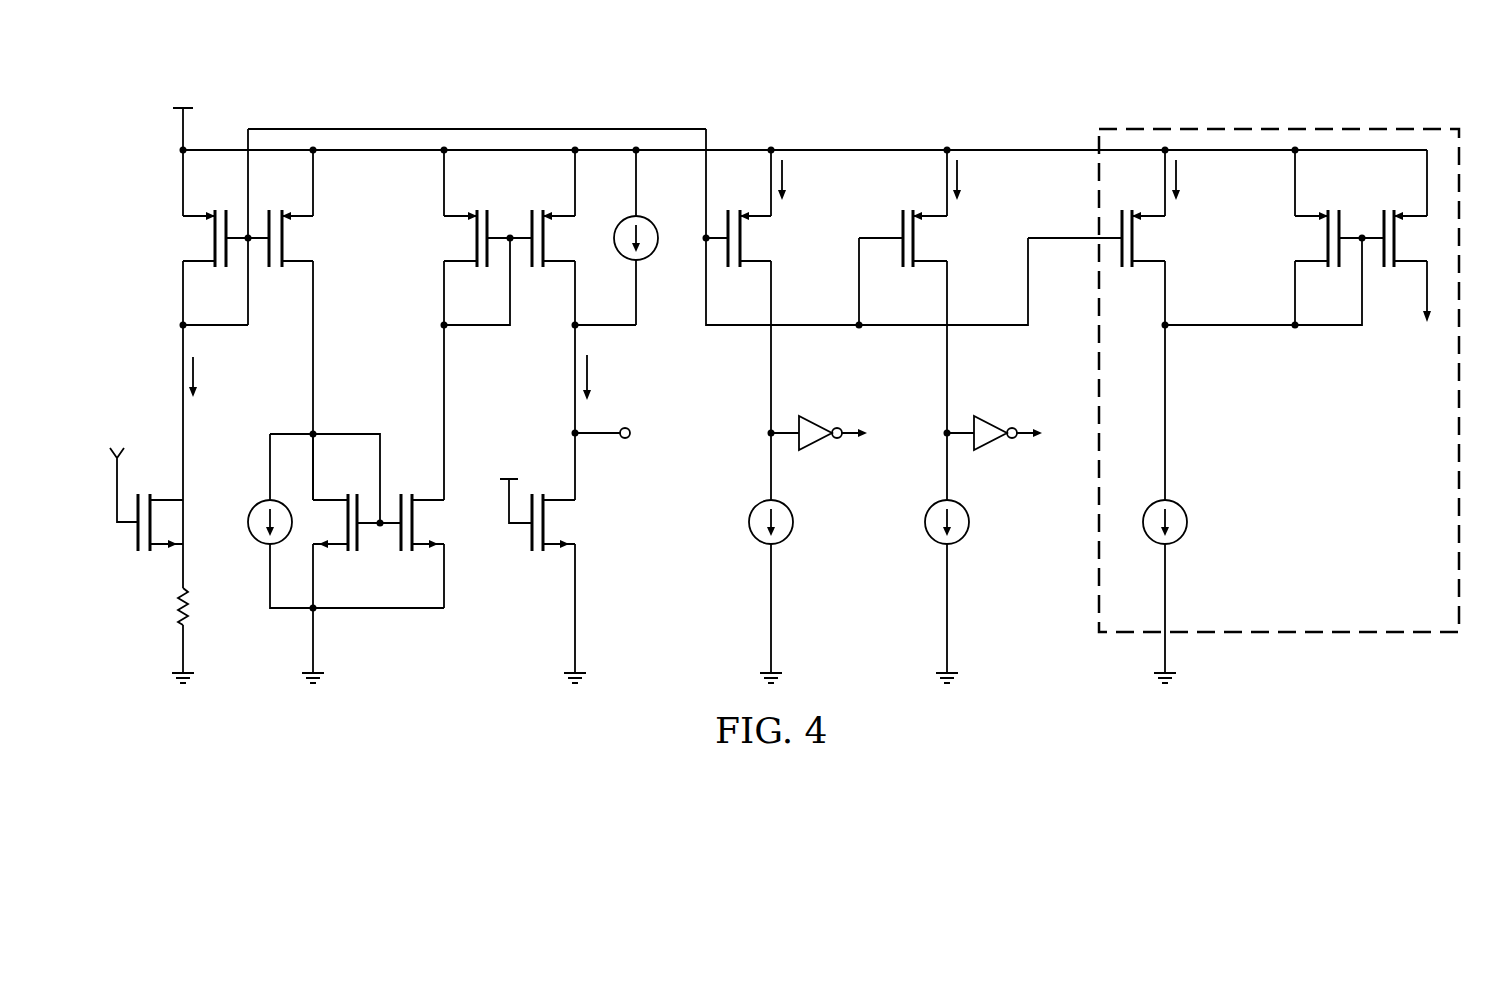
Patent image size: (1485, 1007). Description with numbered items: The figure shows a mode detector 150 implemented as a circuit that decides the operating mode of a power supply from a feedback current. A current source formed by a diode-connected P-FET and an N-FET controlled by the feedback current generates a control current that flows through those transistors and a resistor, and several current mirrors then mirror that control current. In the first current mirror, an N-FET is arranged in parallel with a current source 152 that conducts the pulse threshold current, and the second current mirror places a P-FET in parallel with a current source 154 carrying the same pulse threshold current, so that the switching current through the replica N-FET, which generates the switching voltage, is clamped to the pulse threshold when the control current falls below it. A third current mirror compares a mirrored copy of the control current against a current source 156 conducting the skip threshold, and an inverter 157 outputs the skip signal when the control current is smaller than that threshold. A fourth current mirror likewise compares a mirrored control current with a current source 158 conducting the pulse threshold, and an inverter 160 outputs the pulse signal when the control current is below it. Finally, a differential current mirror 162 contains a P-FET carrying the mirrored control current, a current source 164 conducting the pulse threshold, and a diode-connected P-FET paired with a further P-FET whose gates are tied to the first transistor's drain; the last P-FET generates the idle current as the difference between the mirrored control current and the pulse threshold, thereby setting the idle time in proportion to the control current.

The mode detector 150 is at (428, 84).
The current source 152 is at (255, 539).
The current source 154 is at (651, 256).
The current source 156 is at (785, 540).
The inverter 157 is at (818, 424).
The current source 158 is at (961, 540).
The inverter 160 is at (993, 424).
The differential current mirror 162 is at (1290, 122).
The current source 164 is at (1179, 540).